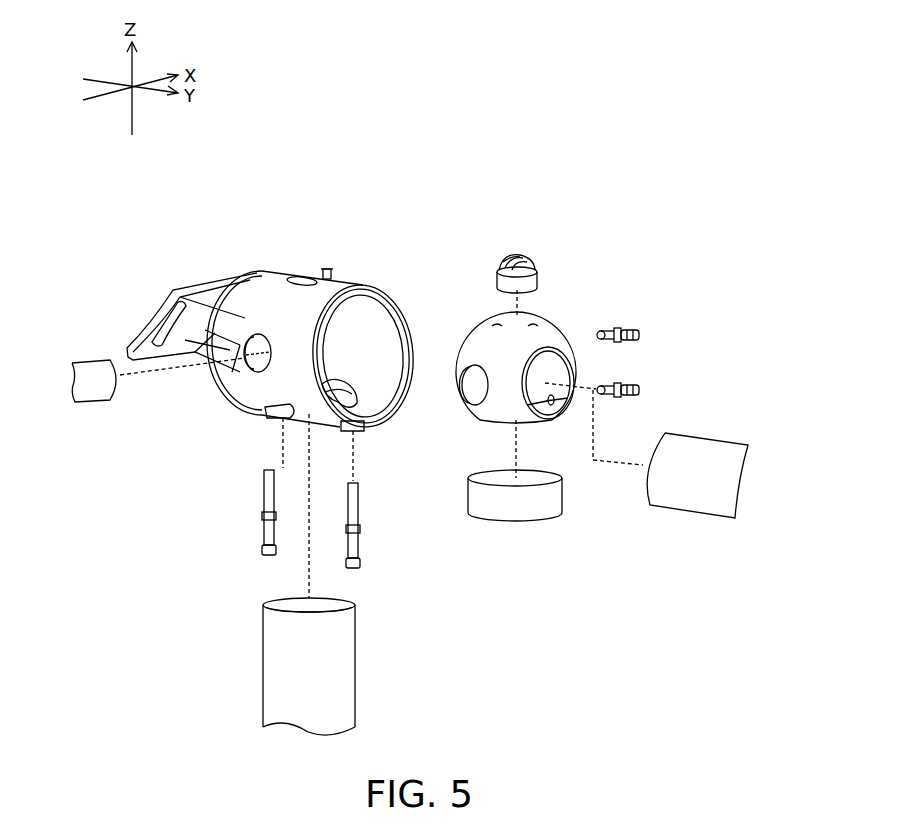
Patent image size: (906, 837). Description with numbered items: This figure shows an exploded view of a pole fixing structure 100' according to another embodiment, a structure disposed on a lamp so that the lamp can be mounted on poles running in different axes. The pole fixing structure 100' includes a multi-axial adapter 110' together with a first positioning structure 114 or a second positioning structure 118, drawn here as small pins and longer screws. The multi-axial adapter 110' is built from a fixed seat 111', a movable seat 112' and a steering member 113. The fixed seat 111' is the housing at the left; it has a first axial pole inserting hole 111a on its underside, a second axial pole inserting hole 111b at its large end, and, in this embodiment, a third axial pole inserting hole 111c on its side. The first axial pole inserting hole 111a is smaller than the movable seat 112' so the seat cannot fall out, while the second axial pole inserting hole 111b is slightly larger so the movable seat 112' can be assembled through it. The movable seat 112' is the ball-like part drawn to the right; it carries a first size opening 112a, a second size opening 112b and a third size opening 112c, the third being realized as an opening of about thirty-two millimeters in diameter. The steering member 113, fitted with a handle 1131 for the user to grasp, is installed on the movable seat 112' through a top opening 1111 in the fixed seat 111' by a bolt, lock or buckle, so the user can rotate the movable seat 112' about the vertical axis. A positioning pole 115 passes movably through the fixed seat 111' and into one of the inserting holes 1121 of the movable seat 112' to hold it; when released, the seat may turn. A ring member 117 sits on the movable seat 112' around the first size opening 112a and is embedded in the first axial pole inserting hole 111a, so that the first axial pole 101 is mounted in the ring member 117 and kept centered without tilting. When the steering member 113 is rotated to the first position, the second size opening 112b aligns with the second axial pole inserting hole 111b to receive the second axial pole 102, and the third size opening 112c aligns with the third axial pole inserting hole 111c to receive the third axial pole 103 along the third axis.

The pole fixing structure 100' is at (109, 186).
The multi-axial adapter 110' is at (381, 73).
The fixed seat 111' is at (272, 332).
The top opening 1111 is at (312, 270).
The positioning pole 115 is at (331, 278).
The third axial pole inserting hole 111c is at (252, 372).
The third axial pole 103 is at (93, 392).
The first axial pole inserting hole 111a is at (287, 422).
The second axial pole inserting hole 111b is at (378, 390).
The second positioning structure 118 is at (353, 544).
The first axial pole 101 is at (343, 690).
The steering member 113 is at (513, 258).
The handle 1131 is at (503, 259).
The movable seat 112' is at (521, 385).
The inserting holes 1121 is at (535, 325).
The third size opening 112c is at (470, 393).
The second size opening 112b is at (550, 415).
The ring member 117 is at (525, 510).
The first size opening 112a is at (507, 527).
The first positioning structure 114 is at (631, 326).
The second axial pole 102 is at (698, 448).